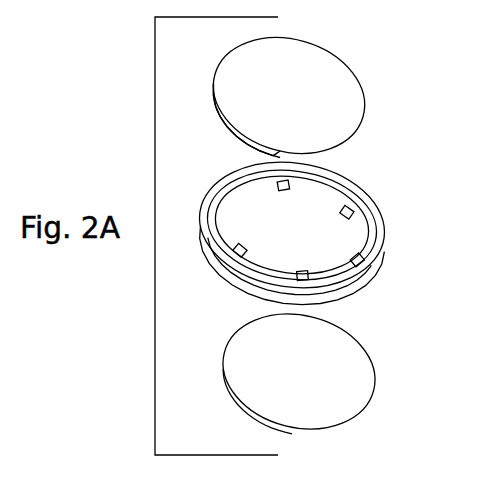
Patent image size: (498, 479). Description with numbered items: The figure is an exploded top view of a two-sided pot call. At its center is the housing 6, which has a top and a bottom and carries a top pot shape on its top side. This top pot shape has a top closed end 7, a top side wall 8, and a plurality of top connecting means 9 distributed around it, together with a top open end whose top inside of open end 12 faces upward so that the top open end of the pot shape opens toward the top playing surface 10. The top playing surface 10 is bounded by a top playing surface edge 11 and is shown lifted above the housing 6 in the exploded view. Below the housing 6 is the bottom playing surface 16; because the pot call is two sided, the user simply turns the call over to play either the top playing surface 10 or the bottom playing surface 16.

The housing 6 is at (342, 293).
The top closed end 7 is at (278, 223).
The top side wall 8 is at (313, 183).
The top connecting means 9 is at (352, 208).
The top playing surface 10 is at (320, 87).
The top playing surface edge 11 is at (222, 65).
The top inside of open end 12 is at (373, 220).
The bottom playing surface 16 is at (339, 382).